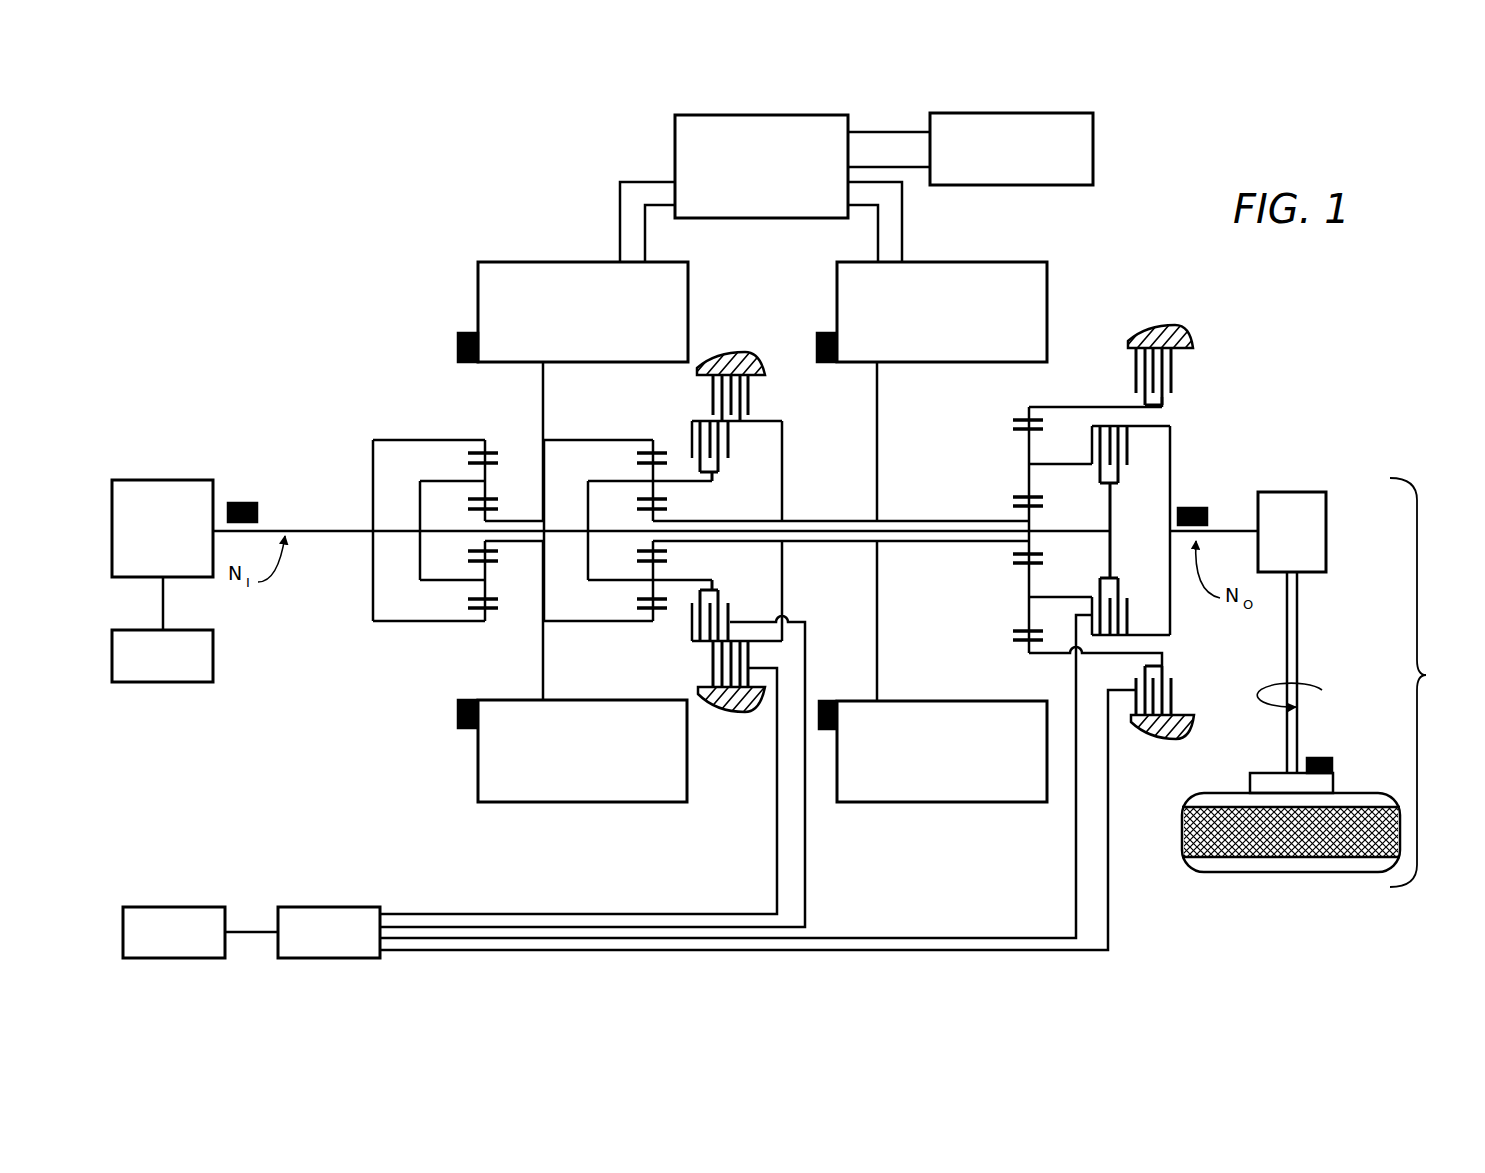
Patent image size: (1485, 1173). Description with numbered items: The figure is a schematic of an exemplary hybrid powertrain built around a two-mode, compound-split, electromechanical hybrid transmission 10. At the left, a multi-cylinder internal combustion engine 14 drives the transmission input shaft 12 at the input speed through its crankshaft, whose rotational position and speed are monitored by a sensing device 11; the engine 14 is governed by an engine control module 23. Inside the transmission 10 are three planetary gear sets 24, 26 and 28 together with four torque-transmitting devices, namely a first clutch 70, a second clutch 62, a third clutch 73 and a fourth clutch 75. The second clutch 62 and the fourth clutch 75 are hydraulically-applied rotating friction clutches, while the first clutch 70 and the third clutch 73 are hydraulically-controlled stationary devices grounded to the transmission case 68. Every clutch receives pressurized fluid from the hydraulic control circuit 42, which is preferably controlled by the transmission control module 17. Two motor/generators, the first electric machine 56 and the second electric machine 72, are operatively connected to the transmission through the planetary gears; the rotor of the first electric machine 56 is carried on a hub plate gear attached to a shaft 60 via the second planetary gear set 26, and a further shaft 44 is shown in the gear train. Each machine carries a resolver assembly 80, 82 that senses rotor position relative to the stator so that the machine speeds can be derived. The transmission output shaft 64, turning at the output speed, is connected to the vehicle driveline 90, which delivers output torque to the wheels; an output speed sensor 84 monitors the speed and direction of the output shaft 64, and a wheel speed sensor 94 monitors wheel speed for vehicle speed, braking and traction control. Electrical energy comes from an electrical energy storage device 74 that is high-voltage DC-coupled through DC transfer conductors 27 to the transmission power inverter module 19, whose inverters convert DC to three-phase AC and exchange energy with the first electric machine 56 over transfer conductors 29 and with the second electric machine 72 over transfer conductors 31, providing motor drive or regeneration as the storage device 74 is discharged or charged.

The transmission 10 is at (432, 212).
The sensing device 11 is at (242, 503).
The input shaft 12 is at (330, 527).
The engine 14 is at (165, 480).
The transmission control module 17 is at (160, 907).
The transmission power inverter module 19 is at (675, 132).
The engine control module 23 is at (212, 676).
The first planetary gear set 24 is at (480, 435).
The second planetary gear set 26 is at (648, 435).
The DC transfer conductors 27 is at (866, 130).
The third planetary gear set 28 is at (1023, 406).
The transfer conductors 29 is at (620, 215).
The transfer conductors 31 is at (903, 215).
The hydraulic control circuit 42 is at (293, 907).
The shaft 44 is at (588, 558).
The first electric machine 56 is at (478, 290).
The output shaft 60 is at (1076, 527).
The clutch C2 62 is at (1140, 468).
The output shaft 64 is at (1228, 528).
The transmission case 68 is at (732, 352).
The clutch C1 70 is at (1123, 369).
The second electric machine 72 is at (1047, 285).
The clutch C3 73 is at (763, 392).
The electrical energy storage device 74 is at (1093, 140).
The clutch C4 75 is at (740, 456).
The resolver assembly 80 is at (458, 346).
The resolver assembly 82 is at (826, 333).
The transmission output speed sensor 84 is at (1194, 505).
The vehicle driveline 90 is at (1425, 675).
The wheel speed sensor 94 is at (1322, 758).